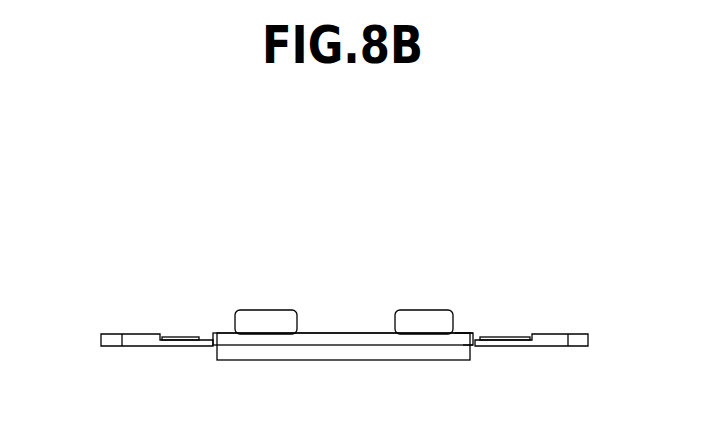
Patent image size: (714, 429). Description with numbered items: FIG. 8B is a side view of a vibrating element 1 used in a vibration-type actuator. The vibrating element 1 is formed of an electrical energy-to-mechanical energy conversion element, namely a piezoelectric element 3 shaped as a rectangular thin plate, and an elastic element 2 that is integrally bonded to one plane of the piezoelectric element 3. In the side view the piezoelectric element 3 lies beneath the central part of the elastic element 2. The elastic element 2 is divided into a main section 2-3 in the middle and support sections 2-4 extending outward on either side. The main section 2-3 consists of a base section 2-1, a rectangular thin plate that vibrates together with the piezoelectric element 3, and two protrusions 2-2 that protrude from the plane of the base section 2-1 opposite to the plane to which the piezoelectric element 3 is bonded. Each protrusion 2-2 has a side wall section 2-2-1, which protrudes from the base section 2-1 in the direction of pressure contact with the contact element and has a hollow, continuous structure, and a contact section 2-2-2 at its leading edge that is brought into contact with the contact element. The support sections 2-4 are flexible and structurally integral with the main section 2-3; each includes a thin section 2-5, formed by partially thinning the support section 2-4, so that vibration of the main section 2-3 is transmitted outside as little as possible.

The vibrating element 1 is at (548, 130).
The elastic element 2 is at (588, 200).
The base section 2-1 is at (345, 338).
The protrusions 2-2 is at (270, 315).
The side wall section 2-2-1 is at (463, 341).
The contact section 2-2-2 is at (469, 348).
The main section 2-3 is at (458, 260).
The support sections 2-4 is at (223, 260).
The thin section 2-5 is at (200, 336).
The piezoelectric element 3 is at (258, 358).